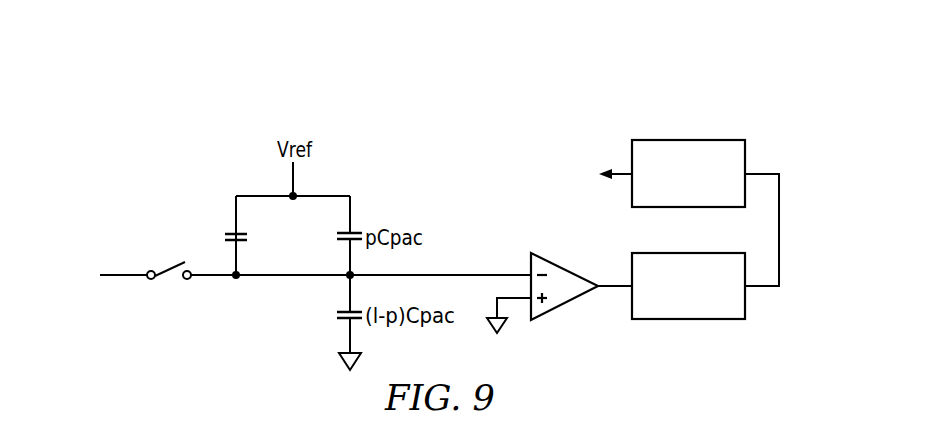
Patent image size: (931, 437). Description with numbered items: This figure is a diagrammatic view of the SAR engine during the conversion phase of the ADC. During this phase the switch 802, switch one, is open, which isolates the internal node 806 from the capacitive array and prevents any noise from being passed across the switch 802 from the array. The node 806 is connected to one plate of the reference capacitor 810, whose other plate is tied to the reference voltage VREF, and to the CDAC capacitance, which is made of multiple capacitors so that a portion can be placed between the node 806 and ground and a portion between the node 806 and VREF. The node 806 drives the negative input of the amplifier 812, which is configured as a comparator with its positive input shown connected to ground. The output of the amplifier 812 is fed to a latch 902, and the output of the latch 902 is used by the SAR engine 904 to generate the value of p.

The switch 802 is at (168, 270).
The internal node 806 is at (473, 275).
The reference capacitor 810 is at (222, 236).
The amplifier 812 is at (563, 304).
The latch 902 is at (687, 319).
The SAR engine 904 is at (688, 140).